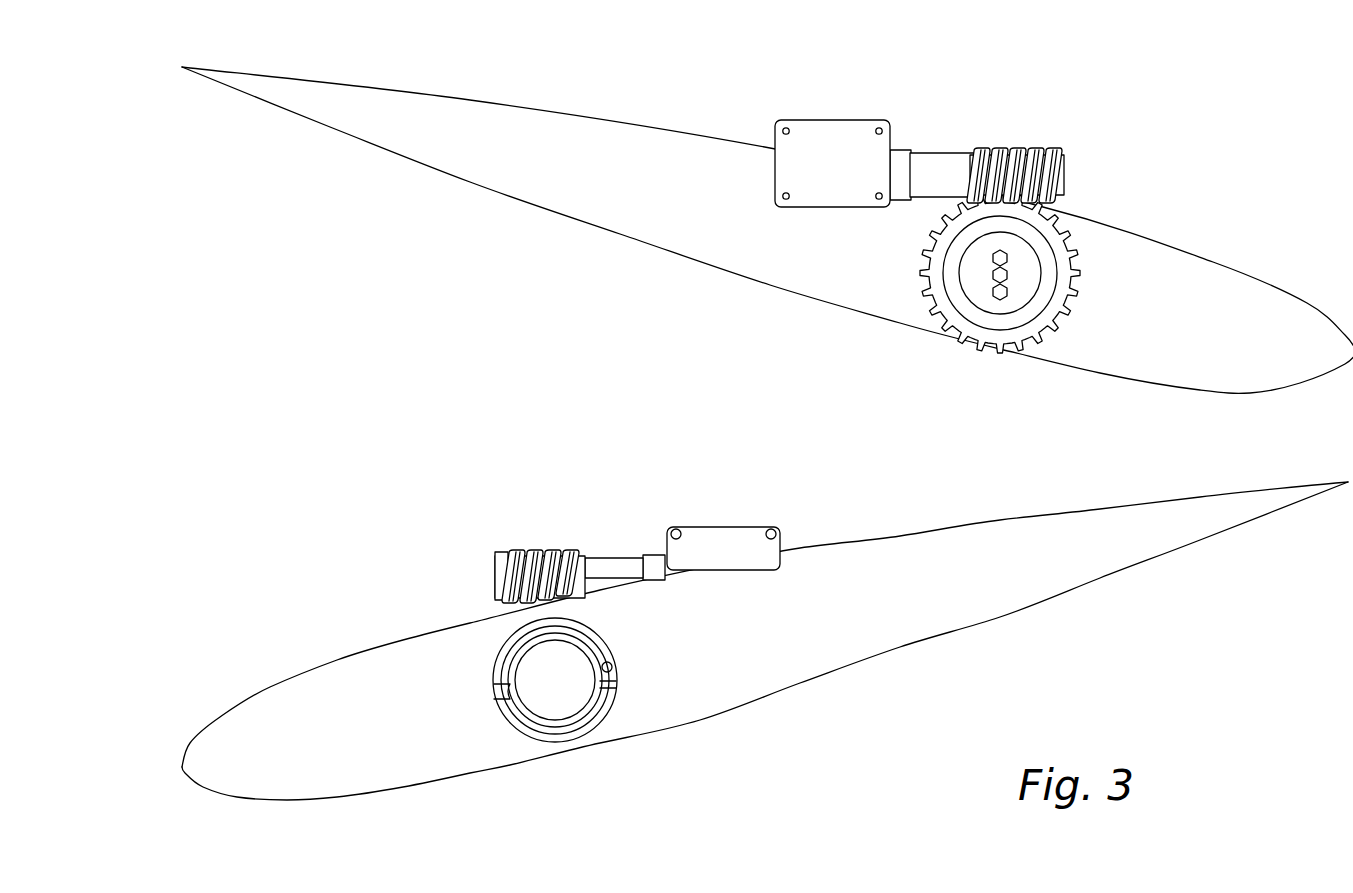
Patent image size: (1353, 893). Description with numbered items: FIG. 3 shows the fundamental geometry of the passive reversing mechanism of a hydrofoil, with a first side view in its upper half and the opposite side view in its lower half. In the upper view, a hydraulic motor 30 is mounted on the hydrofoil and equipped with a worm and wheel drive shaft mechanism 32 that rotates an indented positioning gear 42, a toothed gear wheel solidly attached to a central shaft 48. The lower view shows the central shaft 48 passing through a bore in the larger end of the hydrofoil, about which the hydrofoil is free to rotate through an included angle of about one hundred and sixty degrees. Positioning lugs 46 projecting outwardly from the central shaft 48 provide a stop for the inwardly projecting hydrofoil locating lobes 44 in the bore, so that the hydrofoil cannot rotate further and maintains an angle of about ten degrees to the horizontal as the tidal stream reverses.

The hydraulic motor 30 is at (840, 141).
The worm and wheel drive shaft mechanism 32 is at (1020, 190).
The positioning gear 42 is at (1030, 268).
The hydrofoil locating lobe 44 is at (608, 662).
The positioning lug 46 is at (608, 690).
The central shaft 48 is at (548, 673).